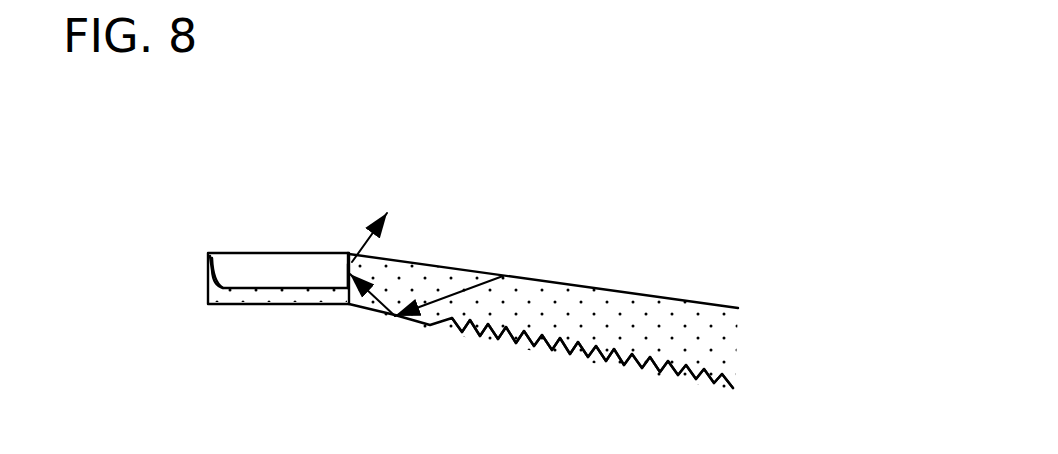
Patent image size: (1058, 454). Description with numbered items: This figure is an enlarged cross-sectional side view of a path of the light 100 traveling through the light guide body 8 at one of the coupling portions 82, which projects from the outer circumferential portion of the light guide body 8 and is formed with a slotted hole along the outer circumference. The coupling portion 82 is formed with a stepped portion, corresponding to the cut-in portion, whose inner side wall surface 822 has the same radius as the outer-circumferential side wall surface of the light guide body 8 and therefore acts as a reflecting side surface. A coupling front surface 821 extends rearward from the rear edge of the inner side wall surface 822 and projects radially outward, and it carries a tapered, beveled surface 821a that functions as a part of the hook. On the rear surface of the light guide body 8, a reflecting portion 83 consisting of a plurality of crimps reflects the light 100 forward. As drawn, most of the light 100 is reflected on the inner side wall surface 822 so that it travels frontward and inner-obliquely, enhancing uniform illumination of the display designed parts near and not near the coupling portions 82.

The light guide body 8 is at (638, 292).
The coupling portion 82 is at (258, 246).
The coupling front surface 821 is at (270, 288).
The tapered surface 821a is at (210, 266).
The inner side wall surface 822 is at (350, 285).
The light 100 is at (357, 252).
The reflecting portion 83 is at (718, 405).